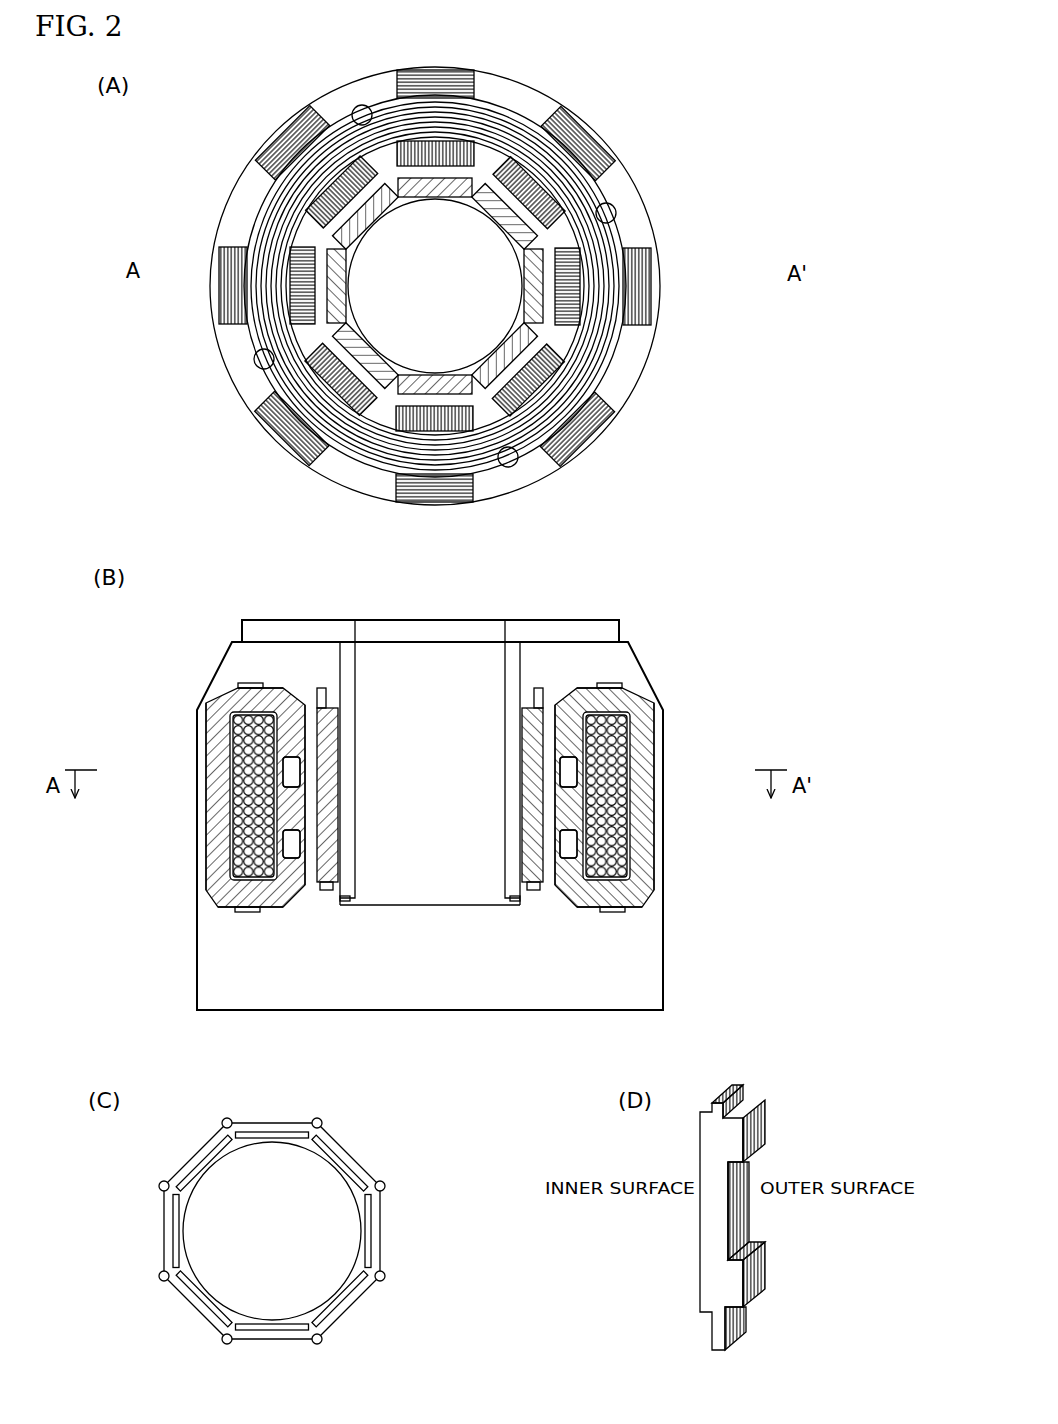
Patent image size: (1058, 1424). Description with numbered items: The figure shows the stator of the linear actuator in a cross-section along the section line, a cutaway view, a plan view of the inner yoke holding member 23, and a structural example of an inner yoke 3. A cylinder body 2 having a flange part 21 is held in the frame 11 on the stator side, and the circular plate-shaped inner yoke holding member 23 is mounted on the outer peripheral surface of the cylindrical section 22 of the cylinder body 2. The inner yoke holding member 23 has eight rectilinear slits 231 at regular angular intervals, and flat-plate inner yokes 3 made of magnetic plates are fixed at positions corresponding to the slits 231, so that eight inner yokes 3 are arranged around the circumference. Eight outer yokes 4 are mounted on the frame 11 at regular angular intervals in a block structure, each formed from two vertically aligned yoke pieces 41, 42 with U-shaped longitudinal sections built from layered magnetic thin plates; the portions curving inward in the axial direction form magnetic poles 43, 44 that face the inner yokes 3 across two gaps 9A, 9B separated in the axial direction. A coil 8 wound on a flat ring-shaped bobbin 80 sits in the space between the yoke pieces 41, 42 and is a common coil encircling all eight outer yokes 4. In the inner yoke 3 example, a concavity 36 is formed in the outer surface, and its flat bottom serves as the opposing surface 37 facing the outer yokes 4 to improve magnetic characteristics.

The cylinder body 2 is at (446, 951).
The inner yoke 3 is at (496, 221).
The outer yoke 4 is at (435, 491).
The yoke piece 41 is at (643, 268).
The yoke piece 42 is at (570, 252).
The magnetic pole 43 is at (280, 698).
The magnetic pole 44 is at (286, 855).
The coil 8 is at (257, 238).
The bobbin 80 is at (253, 212).
The gap 9A is at (307, 728).
The gap 9B is at (305, 873).
The frame 11 is at (663, 995).
The flange part 21 is at (300, 624).
The cylindrical section 22 is at (511, 677).
The inner yoke holding member 23 is at (353, 1119).
The slit 231 is at (520, 905).
The concavity 36 is at (755, 1213).
The opposing surface 37 is at (728, 1207).